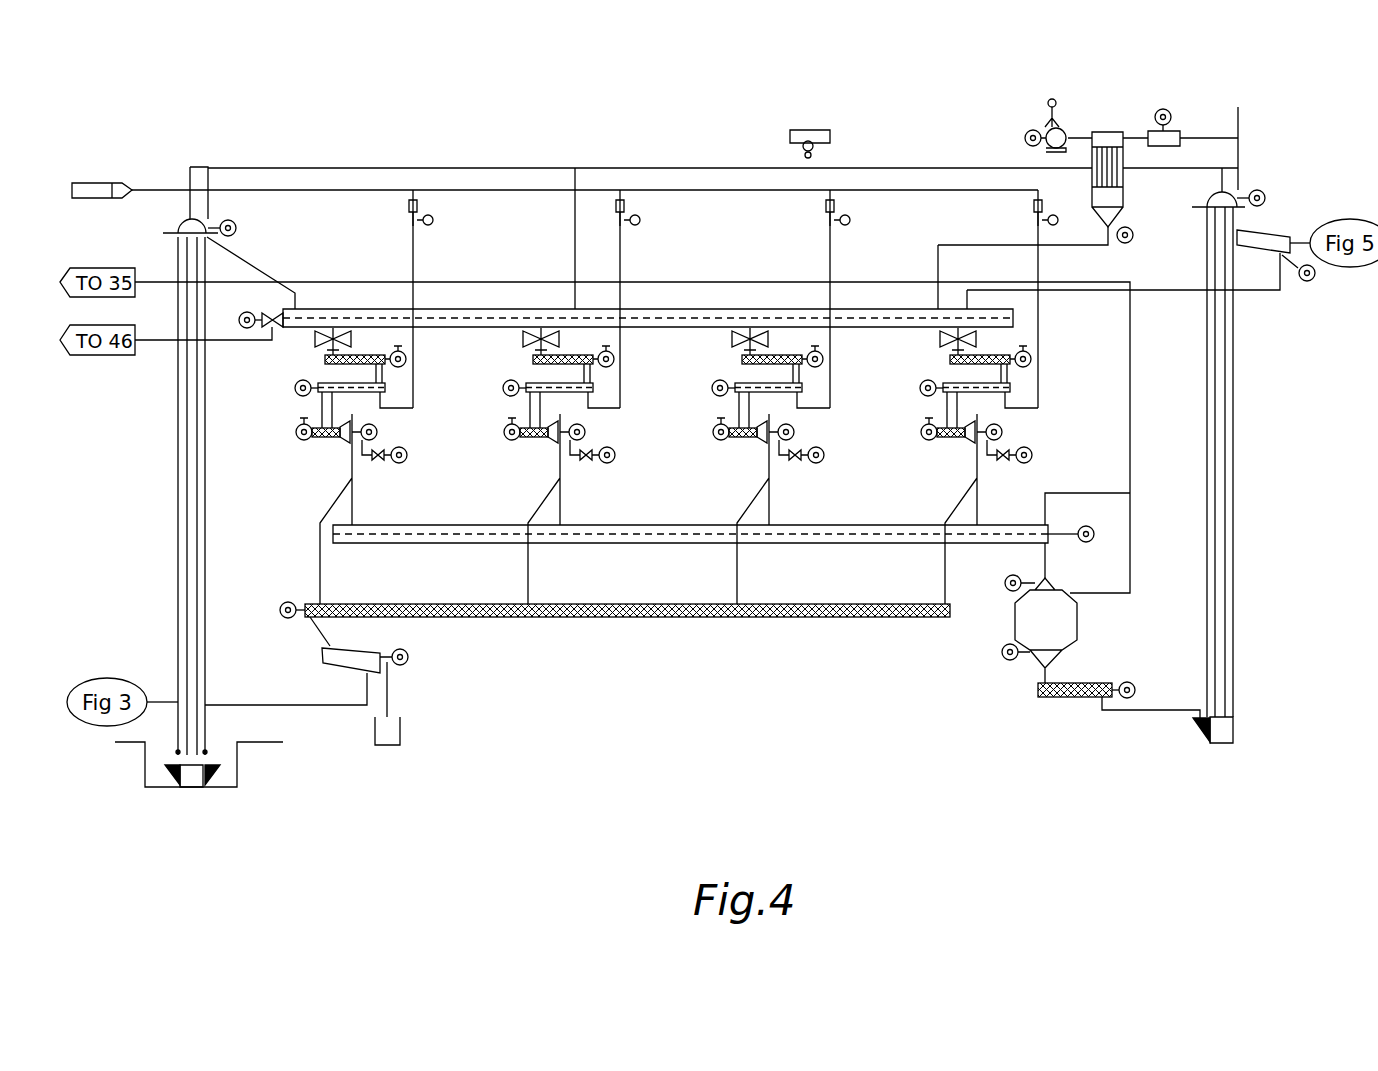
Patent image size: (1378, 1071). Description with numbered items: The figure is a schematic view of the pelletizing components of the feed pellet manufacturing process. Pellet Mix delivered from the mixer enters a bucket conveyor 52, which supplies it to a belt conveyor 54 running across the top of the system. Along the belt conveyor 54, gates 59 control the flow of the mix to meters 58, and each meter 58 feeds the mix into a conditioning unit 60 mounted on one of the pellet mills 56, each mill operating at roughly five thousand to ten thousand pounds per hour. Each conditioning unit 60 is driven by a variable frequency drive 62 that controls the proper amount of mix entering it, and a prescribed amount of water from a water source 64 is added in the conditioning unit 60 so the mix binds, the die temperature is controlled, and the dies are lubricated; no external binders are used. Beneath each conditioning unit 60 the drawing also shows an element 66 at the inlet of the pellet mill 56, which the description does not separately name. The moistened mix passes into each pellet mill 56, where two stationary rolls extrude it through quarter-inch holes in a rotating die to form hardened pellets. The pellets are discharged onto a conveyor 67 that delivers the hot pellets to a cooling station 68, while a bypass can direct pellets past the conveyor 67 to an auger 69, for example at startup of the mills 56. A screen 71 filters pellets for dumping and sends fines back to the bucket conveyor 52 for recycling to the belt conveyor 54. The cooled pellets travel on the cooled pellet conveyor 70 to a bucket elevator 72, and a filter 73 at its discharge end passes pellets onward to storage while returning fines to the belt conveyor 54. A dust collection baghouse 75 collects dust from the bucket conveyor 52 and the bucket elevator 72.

The bucket conveyor 52 is at (178, 408).
The belt conveyor 54 is at (485, 309).
The pellet mill 56 is at (332, 440).
The meter 58 is at (378, 354).
The gate 59 is at (303, 337).
The conditioning unit 60 is at (385, 392).
The variable frequency drive 62 is at (297, 393).
The water source 64 is at (132, 186).
The sensor 66 is at (296, 432).
The conveyor 67 is at (625, 525).
The cooling station 68 is at (1078, 630).
The auger 69 is at (640, 617).
The cooled pellet conveyor 70 is at (1045, 697).
The screen 71 is at (385, 650).
The bucket elevator 72 is at (1237, 420).
The filter 73 is at (1265, 232).
The dust collection baghouse 75 is at (1110, 132).